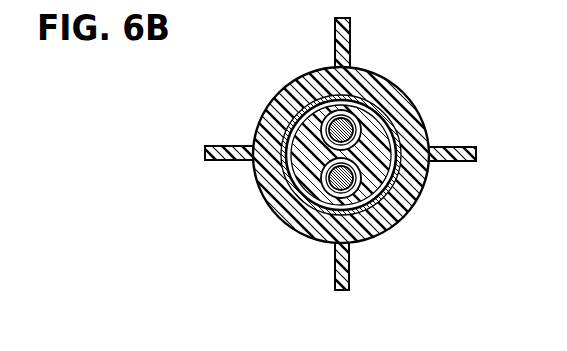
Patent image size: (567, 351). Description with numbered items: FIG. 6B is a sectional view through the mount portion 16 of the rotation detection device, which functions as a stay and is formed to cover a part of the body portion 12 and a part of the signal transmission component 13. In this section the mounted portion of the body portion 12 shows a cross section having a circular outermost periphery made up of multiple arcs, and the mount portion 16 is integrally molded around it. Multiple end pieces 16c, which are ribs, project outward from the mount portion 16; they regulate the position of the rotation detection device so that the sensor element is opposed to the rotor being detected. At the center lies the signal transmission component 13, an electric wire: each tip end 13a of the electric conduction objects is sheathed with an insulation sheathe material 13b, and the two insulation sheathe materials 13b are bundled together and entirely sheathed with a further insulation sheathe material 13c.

The body portion 12 is at (293, 131).
The signal transmission component 13 is at (386, 154).
The tip end 13a is at (381, 189).
The insulation sheathe material 13b is at (360, 178).
The insulation sheathe material 13c is at (403, 179).
The mount portion 16 is at (272, 87).
The end pieces 16c is at (457, 148).